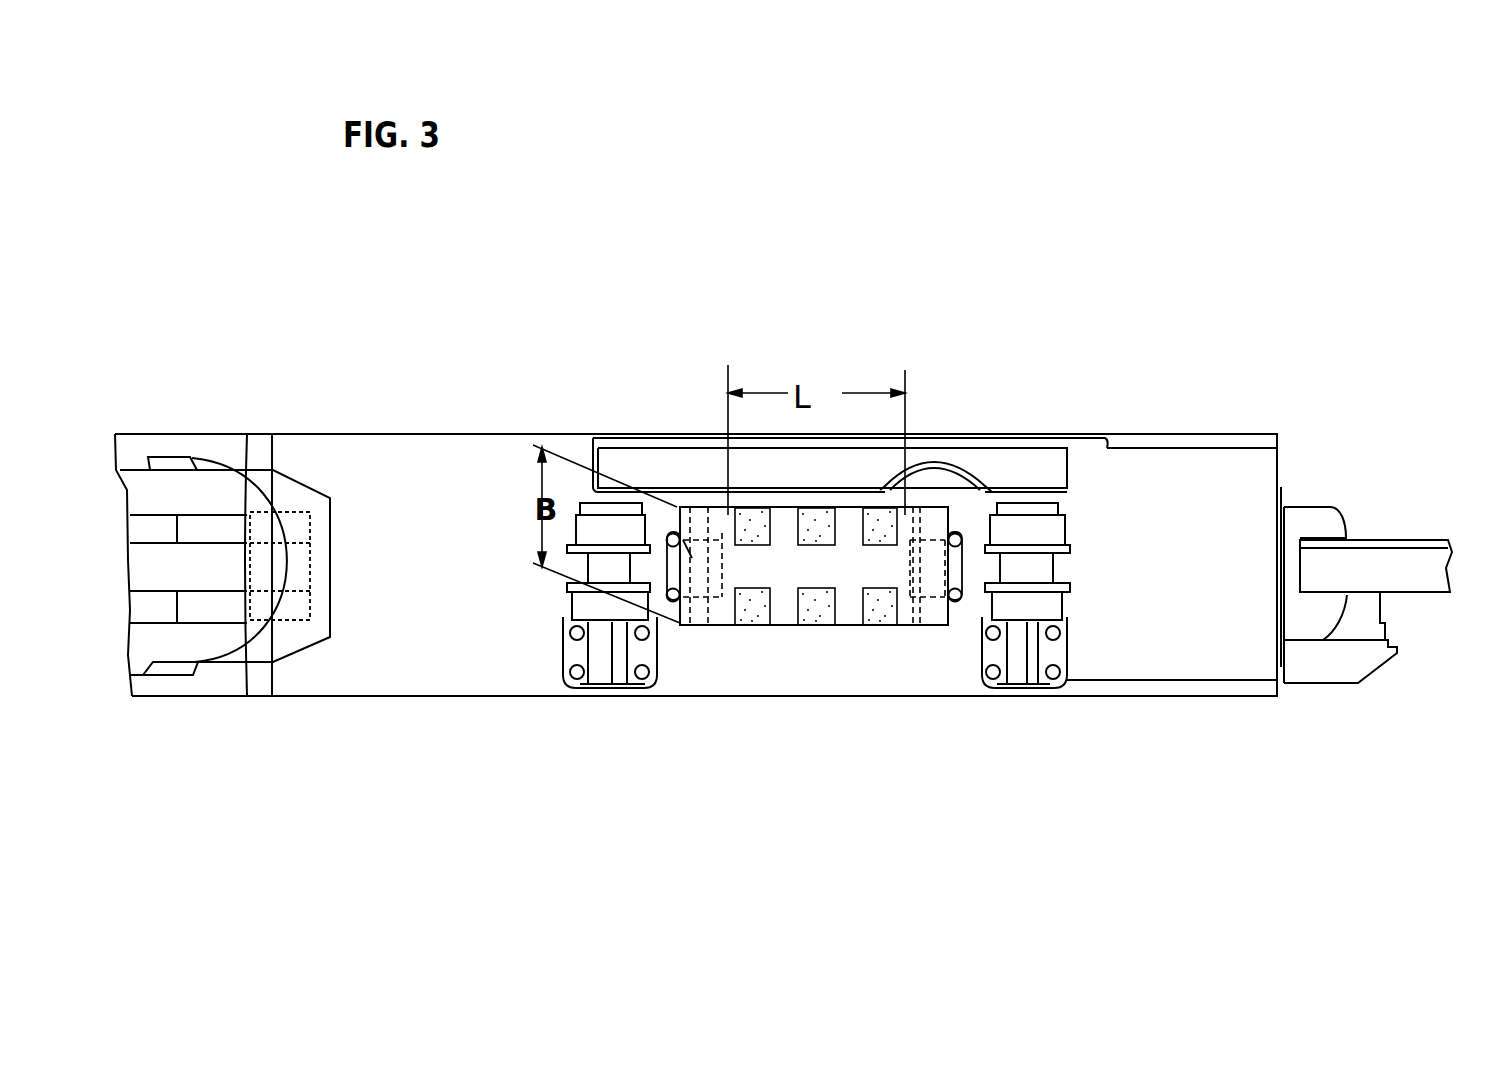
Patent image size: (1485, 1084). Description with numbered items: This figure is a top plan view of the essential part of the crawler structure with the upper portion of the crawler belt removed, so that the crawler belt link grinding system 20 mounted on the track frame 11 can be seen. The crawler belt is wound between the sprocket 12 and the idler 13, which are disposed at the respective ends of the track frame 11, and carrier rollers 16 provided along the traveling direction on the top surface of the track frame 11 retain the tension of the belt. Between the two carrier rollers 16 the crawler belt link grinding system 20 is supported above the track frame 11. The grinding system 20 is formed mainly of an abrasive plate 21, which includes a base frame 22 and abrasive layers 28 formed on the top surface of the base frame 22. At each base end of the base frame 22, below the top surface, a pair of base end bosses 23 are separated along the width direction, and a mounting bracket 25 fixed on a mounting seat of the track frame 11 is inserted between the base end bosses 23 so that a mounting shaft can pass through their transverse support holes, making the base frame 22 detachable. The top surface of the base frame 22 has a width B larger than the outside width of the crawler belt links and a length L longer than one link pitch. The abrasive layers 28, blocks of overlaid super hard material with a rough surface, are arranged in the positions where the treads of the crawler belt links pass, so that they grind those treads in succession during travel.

The track frame 11 is at (650, 458).
The sprocket 12 is at (1408, 562).
The idler 13 is at (220, 575).
The carrier rollers 16 is at (608, 600).
The crawler belt link grinding system 20 is at (840, 484).
The abrasive plate 21 is at (883, 632).
The base frame 22 is at (787, 617).
The base end bosses 23 is at (707, 507).
The mounting brackets 25 is at (673, 530).
The abrasive layers 28 is at (872, 620).